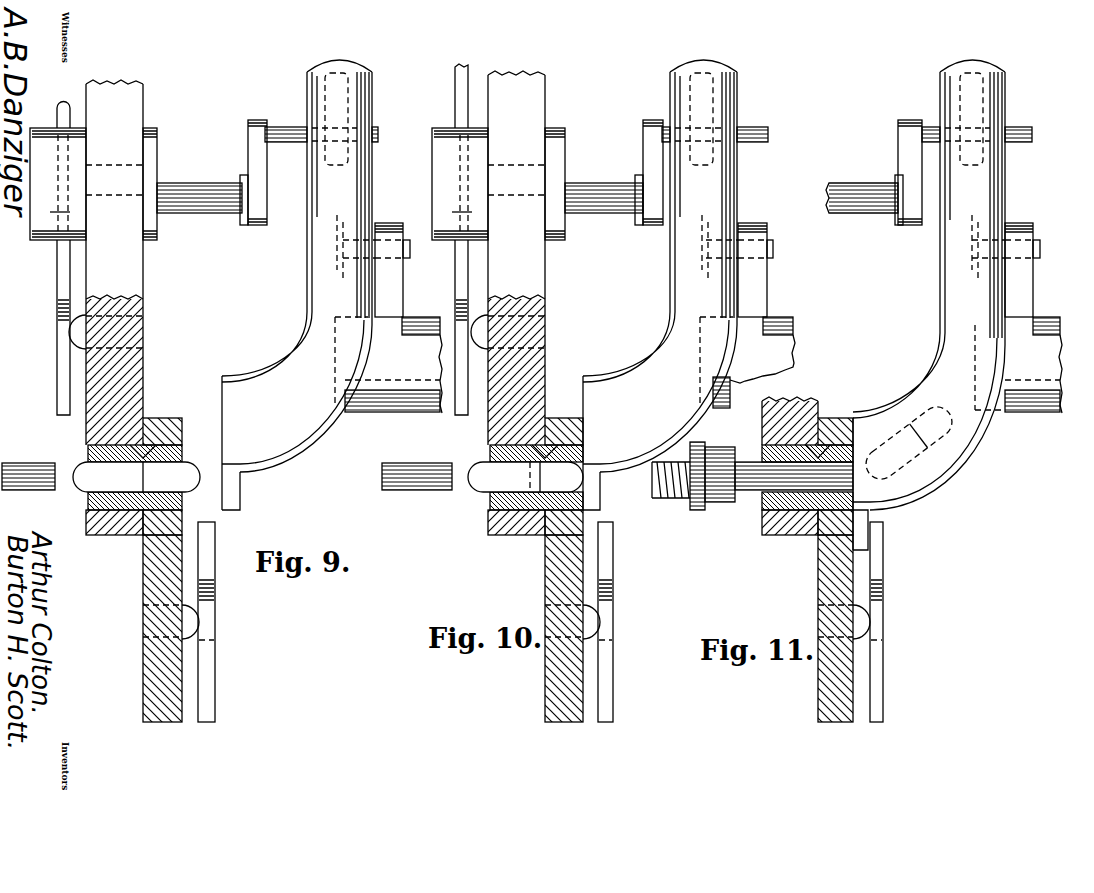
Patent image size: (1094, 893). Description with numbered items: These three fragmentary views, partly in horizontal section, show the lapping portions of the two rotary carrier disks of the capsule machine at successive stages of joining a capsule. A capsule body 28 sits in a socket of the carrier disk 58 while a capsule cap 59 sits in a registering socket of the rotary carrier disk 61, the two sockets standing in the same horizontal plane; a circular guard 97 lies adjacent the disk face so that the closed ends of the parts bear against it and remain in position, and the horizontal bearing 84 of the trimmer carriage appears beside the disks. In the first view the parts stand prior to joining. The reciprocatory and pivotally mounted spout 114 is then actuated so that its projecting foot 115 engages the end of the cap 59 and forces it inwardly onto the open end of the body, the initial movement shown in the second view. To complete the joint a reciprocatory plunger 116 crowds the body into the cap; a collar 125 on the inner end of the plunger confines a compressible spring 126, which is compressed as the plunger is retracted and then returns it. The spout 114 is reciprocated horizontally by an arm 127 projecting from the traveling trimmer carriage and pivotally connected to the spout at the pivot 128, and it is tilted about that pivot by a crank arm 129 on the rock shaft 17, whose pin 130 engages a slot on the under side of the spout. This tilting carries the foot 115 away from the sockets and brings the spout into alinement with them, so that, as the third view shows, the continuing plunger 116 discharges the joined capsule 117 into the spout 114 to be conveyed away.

In FIG. 9, the rock shaft 17 is at (182, 214).
In FIG. 10, the rock shaft 17 is at (599, 187).
In FIG. 11, the rock shaft 17 is at (851, 188).
In FIG. 9, the capsule body 28 is at (76, 497).
In FIG. 10, the capsule body 28 is at (484, 490).
In FIG. 9, the carrier disk 58 is at (143, 362).
In FIG. 10, the carrier disk 58 is at (546, 366).
In FIG. 11, the carrier disk 58 is at (818, 404).
In FIG. 9, the capsule cap 59 is at (180, 461).
In FIG. 10, the capsule cap 59 is at (585, 462).
In FIG. 11, the capsule cap 59 is at (868, 618).
In FIG. 9, the rotary carrier disk 61 is at (143, 583).
In FIG. 10, the rotary carrier disk 61 is at (546, 577).
In FIG. 11, the rotary carrier disk 61 is at (818, 586).
In FIG. 9, the horizontal bearing 84 is at (393, 365).
In FIG. 10, the horizontal bearing 84 is at (754, 362).
In FIG. 11, the horizontal bearing 84 is at (1033, 365).
In FIG. 9, the circular guard 97 is at (62, 276).
In FIG. 10, the circular guard 97 is at (462, 268).
In FIG. 11, the circular guard 97 is at (880, 657).
In FIG. 9, the spout 114 is at (298, 358).
In FIG. 10, the spout 114 is at (678, 298).
In FIG. 11, the spout 114 is at (941, 362).
In FIG. 9, the foot 115 is at (235, 492).
In FIG. 10, the foot 115 is at (598, 492).
In FIG. 11, the foot 115 is at (870, 531).
In FIG. 9, the plunger 116 is at (30, 493).
In FIG. 10, the plunger 116 is at (412, 493).
In FIG. 11, the plunger 116 is at (755, 491).
In FIG. 11, the joined capsule 117 is at (909, 443).
In FIG. 11, the collar 125 is at (698, 511).
In FIG. 11, the compressible spring 126 is at (671, 499).
In FIG. 9, the arm 127 is at (403, 283).
In FIG. 10, the arm 127 is at (758, 274).
In FIG. 11, the arm 127 is at (1027, 276).
In FIG. 9, the pivot 128 is at (410, 250).
In FIG. 10, the pivot 128 is at (771, 247).
In FIG. 11, the pivot 128 is at (1037, 247).
In FIG. 9, the crank arm 129 is at (248, 153).
In FIG. 10, the crank arm 129 is at (646, 141).
In FIG. 11, the crank arm 129 is at (899, 141).
In FIG. 9, the pin 130 is at (283, 127).
In FIG. 10, the pin 130 is at (757, 131).
In FIG. 11, the pin 130 is at (928, 127).